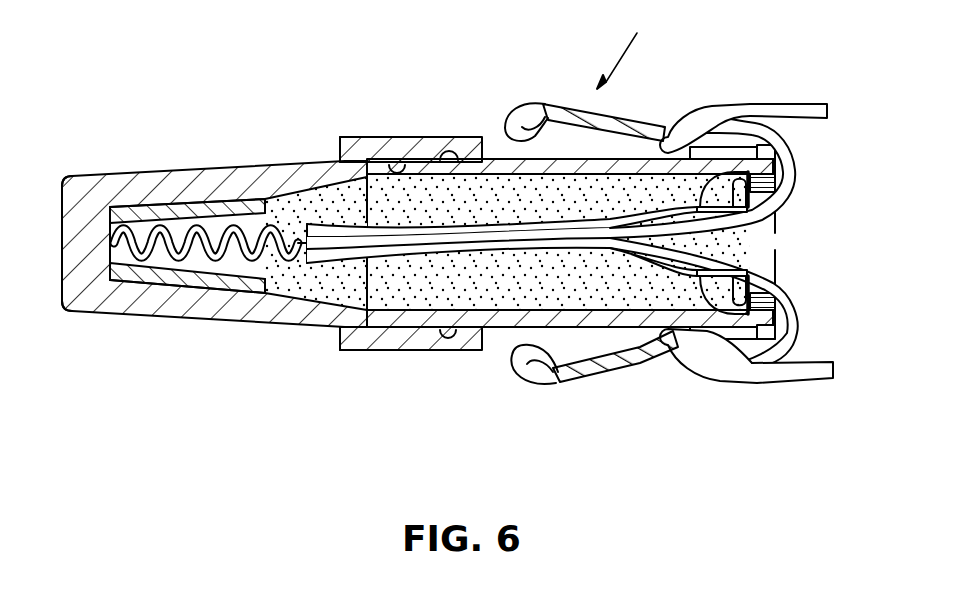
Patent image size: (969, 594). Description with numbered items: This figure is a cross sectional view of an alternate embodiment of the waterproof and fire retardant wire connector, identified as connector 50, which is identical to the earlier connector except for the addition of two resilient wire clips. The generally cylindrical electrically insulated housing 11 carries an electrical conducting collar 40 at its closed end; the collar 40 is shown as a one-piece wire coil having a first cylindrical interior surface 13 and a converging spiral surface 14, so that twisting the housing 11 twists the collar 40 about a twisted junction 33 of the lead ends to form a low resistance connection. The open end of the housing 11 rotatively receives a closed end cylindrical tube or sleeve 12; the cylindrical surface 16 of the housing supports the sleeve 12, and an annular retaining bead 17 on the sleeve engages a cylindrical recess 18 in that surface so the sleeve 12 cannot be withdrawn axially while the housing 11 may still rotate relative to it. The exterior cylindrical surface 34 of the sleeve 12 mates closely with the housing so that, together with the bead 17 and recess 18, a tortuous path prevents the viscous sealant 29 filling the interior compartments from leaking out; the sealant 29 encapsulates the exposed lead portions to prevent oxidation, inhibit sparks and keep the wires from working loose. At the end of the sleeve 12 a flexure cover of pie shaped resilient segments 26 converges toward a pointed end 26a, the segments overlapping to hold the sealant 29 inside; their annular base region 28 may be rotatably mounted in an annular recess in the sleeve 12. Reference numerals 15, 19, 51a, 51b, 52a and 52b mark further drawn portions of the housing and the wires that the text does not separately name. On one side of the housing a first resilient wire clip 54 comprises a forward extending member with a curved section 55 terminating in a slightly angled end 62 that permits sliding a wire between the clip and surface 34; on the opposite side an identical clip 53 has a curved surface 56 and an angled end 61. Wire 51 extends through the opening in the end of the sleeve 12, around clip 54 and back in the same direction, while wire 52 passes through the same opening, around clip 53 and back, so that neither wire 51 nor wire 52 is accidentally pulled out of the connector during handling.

The housing 11 is at (200, 177).
The sleeve 12 is at (613, 167).
The first cylindrical interior surface 13 is at (110, 241).
The spiral surface 14 is at (250, 203).
The shoulder 15 is at (340, 187).
The cylindrical surface 16 is at (400, 168).
The retaining bead 17 is at (448, 330).
The cylindrical recess 18 is at (110, 177).
The upper flange 19 is at (367, 137).
The resilient segments 26 is at (730, 150).
The pointed end 26a is at (690, 140).
The annular base region 28 is at (765, 147).
The sealant 29 is at (507, 297).
The twisted junction 33 is at (252, 318).
The exterior cylindrical surface 34 is at (550, 327).
The electrical conducting collar 40 is at (153, 207).
The connector 50 is at (624, 49).
The wire 51 is at (793, 105).
The lower conductor 51a is at (313, 307).
The lower conductor inner 51b is at (247, 257).
The wire 52 is at (800, 380).
The upper conductor 52a is at (313, 207).
The upper conductor inner 52b is at (290, 203).
The resilient wire clip 53 is at (613, 373).
The resilient wire clip 54 is at (640, 123).
The curved section 55 is at (547, 125).
The curved surface 56 is at (560, 373).
The angled end 61 is at (513, 352).
The angled end 62 is at (505, 137).